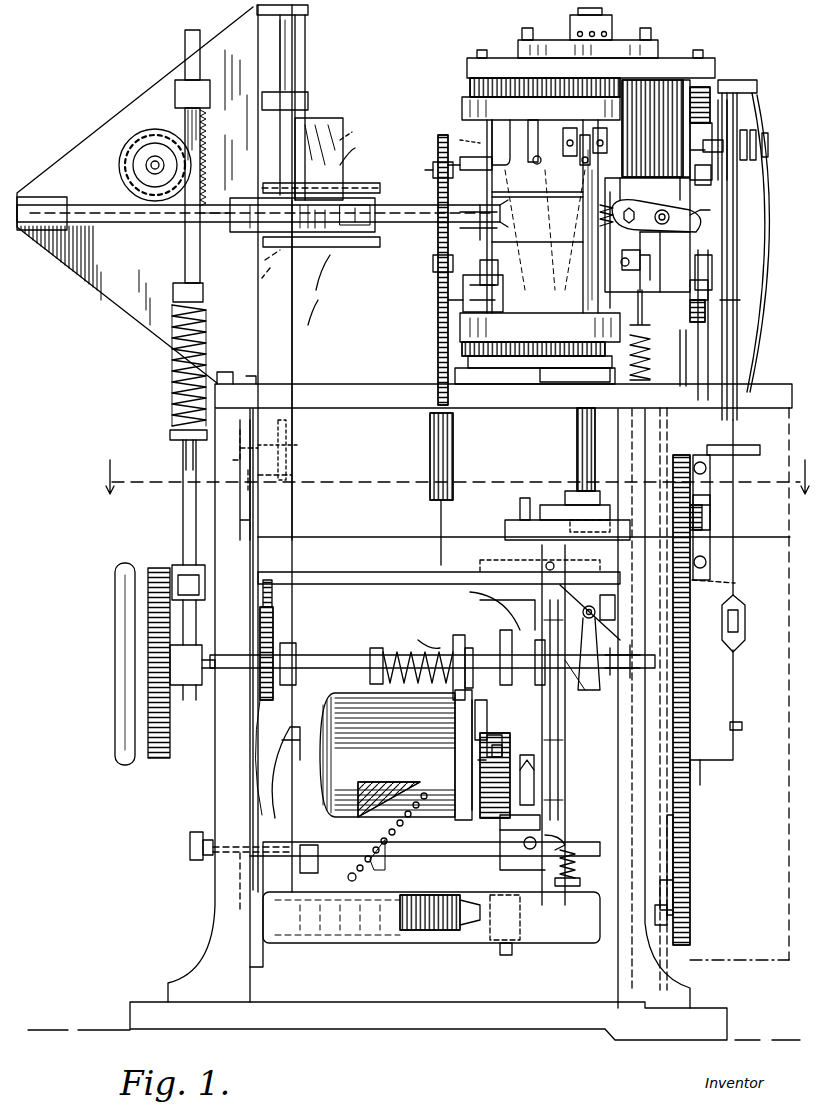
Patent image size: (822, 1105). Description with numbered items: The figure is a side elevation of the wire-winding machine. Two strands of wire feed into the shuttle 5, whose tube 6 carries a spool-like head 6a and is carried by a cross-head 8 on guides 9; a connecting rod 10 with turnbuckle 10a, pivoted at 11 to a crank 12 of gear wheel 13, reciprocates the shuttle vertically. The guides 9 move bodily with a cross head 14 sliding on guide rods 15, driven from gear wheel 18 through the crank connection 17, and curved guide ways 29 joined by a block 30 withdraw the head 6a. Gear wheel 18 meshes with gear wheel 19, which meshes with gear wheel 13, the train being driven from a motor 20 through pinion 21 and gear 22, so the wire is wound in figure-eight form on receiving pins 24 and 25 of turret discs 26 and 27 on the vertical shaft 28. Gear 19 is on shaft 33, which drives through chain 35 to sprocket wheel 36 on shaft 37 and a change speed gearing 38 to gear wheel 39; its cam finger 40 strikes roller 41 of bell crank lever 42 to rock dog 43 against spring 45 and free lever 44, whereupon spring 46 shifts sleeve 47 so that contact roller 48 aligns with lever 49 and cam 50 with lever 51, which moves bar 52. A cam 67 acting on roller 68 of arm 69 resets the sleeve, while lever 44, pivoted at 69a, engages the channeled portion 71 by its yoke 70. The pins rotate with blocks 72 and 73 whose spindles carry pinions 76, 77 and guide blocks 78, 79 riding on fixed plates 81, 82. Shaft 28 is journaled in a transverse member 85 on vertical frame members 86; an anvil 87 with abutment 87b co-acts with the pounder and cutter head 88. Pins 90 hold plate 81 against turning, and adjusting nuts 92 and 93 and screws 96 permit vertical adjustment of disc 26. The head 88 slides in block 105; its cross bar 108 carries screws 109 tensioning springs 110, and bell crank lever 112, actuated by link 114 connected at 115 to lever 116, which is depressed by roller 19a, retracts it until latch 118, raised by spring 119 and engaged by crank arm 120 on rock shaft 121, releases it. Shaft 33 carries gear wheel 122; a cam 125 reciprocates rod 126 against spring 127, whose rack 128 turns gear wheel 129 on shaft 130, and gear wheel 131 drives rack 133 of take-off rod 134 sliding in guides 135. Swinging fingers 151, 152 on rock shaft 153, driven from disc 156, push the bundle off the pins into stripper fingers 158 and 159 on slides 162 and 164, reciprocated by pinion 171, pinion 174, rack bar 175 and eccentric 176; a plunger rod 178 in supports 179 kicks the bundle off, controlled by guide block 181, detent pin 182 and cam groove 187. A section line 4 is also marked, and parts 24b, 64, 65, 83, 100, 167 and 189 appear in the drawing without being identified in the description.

The section line 4 is at (447, 488).
The shuttle 5 is at (787, 140).
The tube 6 is at (717, 140).
The spool-like head 6a is at (768, 150).
The cross-head 8 is at (737, 182).
The guides 9 is at (700, 220).
The connecting rod 10 is at (733, 575).
The turnbuckle 10a is at (745, 630).
The pivot 11 is at (742, 726).
The crank 12 is at (703, 765).
The gear wheel 13 is at (690, 895).
The cross head 14 is at (710, 512).
The guide rods 15 is at (740, 562).
The crank connection 17 is at (700, 505).
The gear wheel 18 is at (702, 528).
The gear wheel 19 is at (690, 695).
The roller 19a is at (690, 865).
The motor 20 is at (387, 755).
The pinion 21 is at (480, 760).
The gear 22 is at (475, 738).
The receiving pins 24 is at (455, 150).
The bracket 24b is at (705, 179).
The receiving pins 25 is at (715, 262).
The upper turret disc 26 is at (462, 108).
The lower turret disc 27 is at (460, 328).
The vertical shaft 28 is at (577, 432).
The curved guide ways 29 is at (745, 300).
The block 30 is at (740, 80).
The shaft 33 is at (330, 655).
The chain 35 is at (275, 808).
The sprocket wheel 36 is at (300, 860).
The shaft 37 is at (320, 915).
The change speed gearing 38 is at (402, 892).
The gear wheel 39 is at (506, 955).
The cam finger 40 is at (540, 830).
The roller 41 is at (534, 770).
The bell crank lever 42 is at (555, 840).
The dog 43 is at (570, 850).
The lever 44 is at (565, 742).
The spring 45 is at (575, 868).
The spring 46 is at (385, 650).
The sleeve 47 is at (470, 625).
The contact roller 48 is at (455, 725).
The lever 49 is at (480, 600).
The cam 50 is at (487, 745).
The lever 51 is at (520, 625).
The bar 52 is at (505, 530).
The block 64 is at (550, 506).
The collar 65 is at (570, 492).
The cam 67 is at (620, 612).
The roller 68 is at (583, 612).
The arm 69 is at (580, 690).
The pivot 69a is at (500, 565).
The yoke 70 is at (577, 694).
The annularly channeled portion 71 is at (491, 603).
The block 72 is at (512, 140).
The block 73 is at (540, 300).
The pinion 76 is at (470, 88).
The pinion 77 is at (462, 349).
The guide block 78 is at (460, 65).
The guide block 79 is at (562, 342).
The fixed plate 81 is at (548, 30).
The fixed plate 82 is at (520, 370).
The bolt 83 is at (500, 62).
The transverse member 85 is at (625, 62).
The vertical frame members 86 is at (665, 90).
The anvil 87 is at (545, 240).
The abutment 87b is at (480, 230).
The head 88 is at (628, 180).
The pins 90 is at (652, 34).
The adjusting nut 92 is at (615, 12).
The adjusting nut 93 is at (575, 162).
The screws 96 is at (533, 160).
The plate 100 is at (550, 120).
The block 105 is at (710, 246).
The cross bar 108 is at (690, 230).
The screws 109 is at (700, 213).
The springs 110 is at (632, 195).
The bell crank lever 112 is at (618, 270).
The link 114 is at (686, 370).
The connection 115 is at (690, 912).
The lever 116 is at (720, 743).
The latch 118 is at (740, 318).
The spring 119 is at (705, 345).
The crank arm 120 is at (735, 592).
The rock shaft 121 is at (430, 520).
The gear wheel 122 is at (172, 570).
The cam 125 is at (148, 628).
The rod 126 is at (183, 522).
The spring 127 is at (172, 388).
The rack 128 is at (200, 140).
The gear wheel 129 is at (130, 128).
The shaft 130 is at (150, 162).
The second gear wheel 131 is at (140, 150).
The rack 133 is at (160, 222).
The take-off rod 134 is at (112, 222).
The guides 135 is at (232, 250).
The swinging finger 151 is at (433, 268).
The swinging finger 152 is at (438, 150).
The vertical rock shaft 153 is at (438, 312).
The disc 156 is at (418, 640).
The upper stripper fingers 158 is at (371, 178).
The lower stripper fingers 159 is at (372, 254).
The vertical slide 162 is at (297, 30).
The vertical slide 164 is at (310, 512).
The rod 167 is at (262, 188).
The pinion 171 is at (292, 482).
The pinion 174 is at (245, 515).
The rack bar 175 is at (300, 445).
The eccentric 176 is at (273, 625).
The plunger rod 178 is at (332, 279).
The supports 179 is at (323, 312).
The guide block 181 is at (325, 118).
The detent pin 182 is at (249, 266).
The cam groove 187 is at (361, 130).
The pin 189 is at (361, 151).